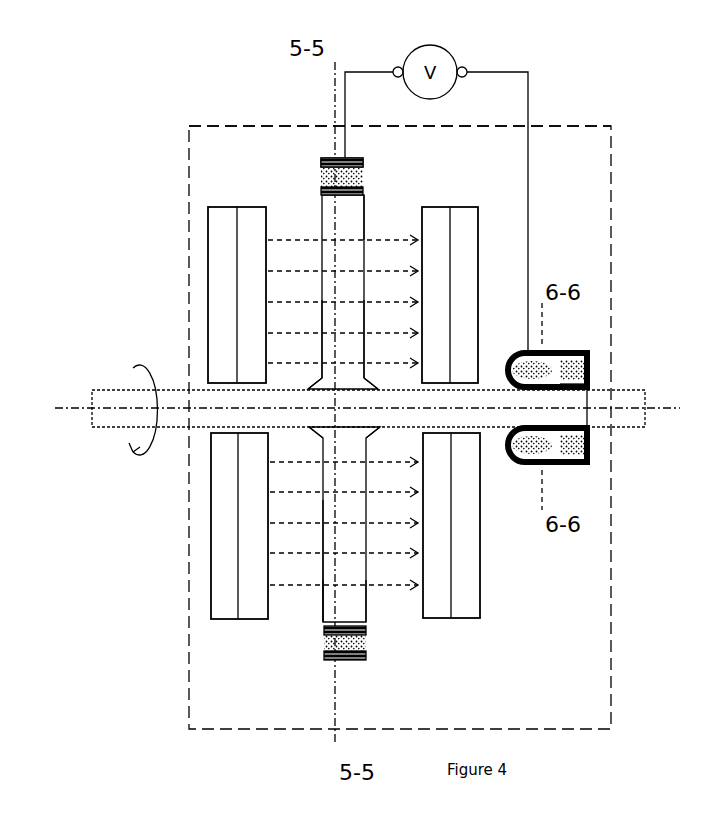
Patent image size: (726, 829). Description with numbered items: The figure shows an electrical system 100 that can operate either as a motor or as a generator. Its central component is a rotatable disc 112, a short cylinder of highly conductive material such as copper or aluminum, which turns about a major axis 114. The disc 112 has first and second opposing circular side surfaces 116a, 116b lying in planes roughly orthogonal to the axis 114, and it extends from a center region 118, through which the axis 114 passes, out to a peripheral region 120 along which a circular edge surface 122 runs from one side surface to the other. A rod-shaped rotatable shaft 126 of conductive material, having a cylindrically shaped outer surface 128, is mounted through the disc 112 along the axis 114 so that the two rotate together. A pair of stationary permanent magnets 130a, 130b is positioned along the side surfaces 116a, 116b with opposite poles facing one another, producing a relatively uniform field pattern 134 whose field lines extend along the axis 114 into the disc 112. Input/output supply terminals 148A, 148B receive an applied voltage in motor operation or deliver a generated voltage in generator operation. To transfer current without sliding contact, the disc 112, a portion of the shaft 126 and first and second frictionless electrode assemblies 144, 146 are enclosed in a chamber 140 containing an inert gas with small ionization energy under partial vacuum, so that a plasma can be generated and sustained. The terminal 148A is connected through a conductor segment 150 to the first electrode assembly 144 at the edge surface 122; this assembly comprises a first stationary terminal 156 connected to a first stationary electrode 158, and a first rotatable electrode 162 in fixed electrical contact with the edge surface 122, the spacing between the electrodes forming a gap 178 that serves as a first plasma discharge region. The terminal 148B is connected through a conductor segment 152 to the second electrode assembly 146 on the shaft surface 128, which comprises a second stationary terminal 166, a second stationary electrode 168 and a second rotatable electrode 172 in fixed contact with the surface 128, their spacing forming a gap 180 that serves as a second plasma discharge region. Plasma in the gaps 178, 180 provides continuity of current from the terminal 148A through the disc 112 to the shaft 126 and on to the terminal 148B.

The electrical system 100 is at (72, 59).
The rotatable disc 112 is at (322, 215).
The major axis 114 is at (332, 354).
The first major side surface 116a is at (318, 344).
The second major side surface 116b is at (370, 322).
The center region 118 is at (312, 430).
The peripheral region 120 is at (322, 600).
The circular edge surface 122 is at (366, 632).
The rotatable shaft 126 is at (122, 398).
The cylindrically shaped outer surface 128 is at (557, 124).
The first stationary permanent magnet 130a is at (208, 270).
The second stationary permanent magnet 130b is at (480, 585).
The field pattern 134 is at (298, 522).
The chamber 140 is at (613, 140).
The first frictionless electrode assembly 144 is at (321, 177).
The second frictionless electrode assembly 146 is at (595, 372).
The input/output supply terminal 148A is at (396, 66).
The input/output supply terminal 148B is at (467, 67).
The conductor segment 150 is at (345, 113).
The conductor segment 152 is at (528, 262).
The first stationary terminal 156 is at (321, 160).
The first stationary electrode 158 is at (364, 163).
The first rotatable electrode 162 is at (364, 190).
The second stationary terminal 166 is at (570, 353).
The second stationary electrode 168 is at (590, 360).
The second rotatable electrode 172 is at (588, 386).
The gap 178 is at (360, 199).
The gap 180 is at (548, 386).